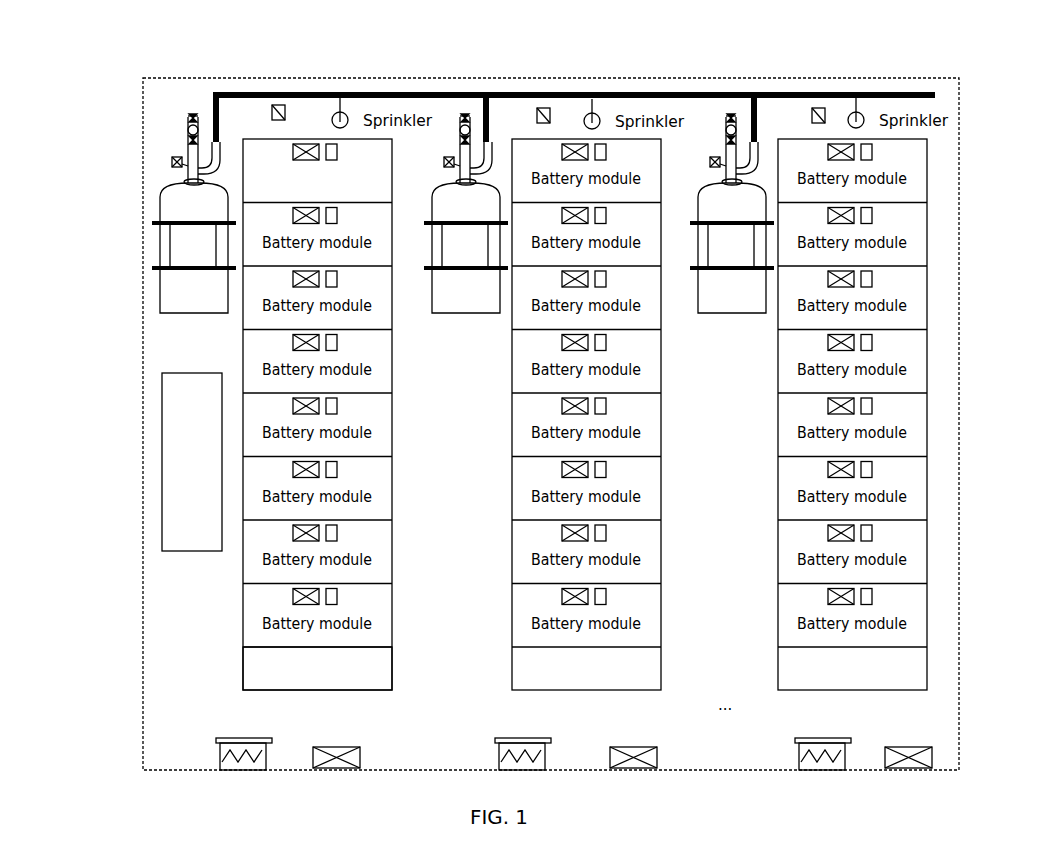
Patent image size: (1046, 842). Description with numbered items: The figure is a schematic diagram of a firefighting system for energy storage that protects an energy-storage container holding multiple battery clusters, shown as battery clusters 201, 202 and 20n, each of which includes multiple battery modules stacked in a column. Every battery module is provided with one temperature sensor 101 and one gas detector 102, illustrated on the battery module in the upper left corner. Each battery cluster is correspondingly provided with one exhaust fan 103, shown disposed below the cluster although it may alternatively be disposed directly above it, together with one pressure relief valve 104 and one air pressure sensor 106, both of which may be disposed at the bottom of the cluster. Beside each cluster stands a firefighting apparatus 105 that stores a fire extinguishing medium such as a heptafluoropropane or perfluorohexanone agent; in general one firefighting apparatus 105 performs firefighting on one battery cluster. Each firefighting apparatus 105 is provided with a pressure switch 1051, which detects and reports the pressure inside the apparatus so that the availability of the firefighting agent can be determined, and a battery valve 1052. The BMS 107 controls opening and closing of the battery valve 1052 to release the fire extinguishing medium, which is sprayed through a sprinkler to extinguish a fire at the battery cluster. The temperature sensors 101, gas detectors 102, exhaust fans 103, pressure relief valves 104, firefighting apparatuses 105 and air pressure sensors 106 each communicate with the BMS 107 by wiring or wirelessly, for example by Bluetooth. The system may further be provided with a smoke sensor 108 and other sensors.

The temperature sensor 101 is at (437, 95).
The gas detector 102 is at (282, 87).
The exhaust fan 103 is at (214, 744).
The pressure relief valve 104 is at (385, 746).
The firefighting apparatus 105 is at (140, 191).
The pressure switch 1051 is at (120, 176).
The battery valve 1052 is at (121, 105).
The air pressure sensor 106 is at (317, 668).
The BMS 107 is at (192, 462).
The smoke sensor 108 is at (271, 103).
The battery cluster 201 is at (384, 363).
The battery cluster 202 is at (586, 426).
The battery cluster 20n is at (852, 426).